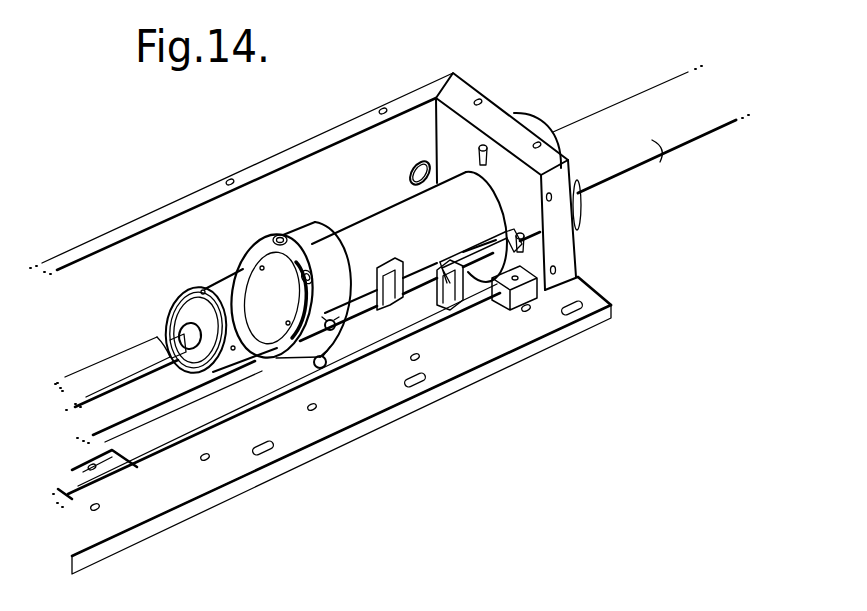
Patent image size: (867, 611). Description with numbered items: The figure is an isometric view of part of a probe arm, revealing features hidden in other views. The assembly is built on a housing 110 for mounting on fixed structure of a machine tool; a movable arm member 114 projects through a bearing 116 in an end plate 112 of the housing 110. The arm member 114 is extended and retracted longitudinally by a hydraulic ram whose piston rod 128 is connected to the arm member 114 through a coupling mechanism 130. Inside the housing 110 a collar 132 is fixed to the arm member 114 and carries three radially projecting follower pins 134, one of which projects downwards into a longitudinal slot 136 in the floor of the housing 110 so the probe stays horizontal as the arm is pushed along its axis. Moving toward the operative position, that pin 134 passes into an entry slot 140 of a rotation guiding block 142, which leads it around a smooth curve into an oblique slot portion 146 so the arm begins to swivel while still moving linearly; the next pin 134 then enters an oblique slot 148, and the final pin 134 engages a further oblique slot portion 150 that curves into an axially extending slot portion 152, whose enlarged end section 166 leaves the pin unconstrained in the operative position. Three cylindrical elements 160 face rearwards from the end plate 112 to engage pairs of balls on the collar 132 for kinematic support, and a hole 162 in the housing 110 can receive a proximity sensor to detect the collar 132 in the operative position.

The housing 110 is at (310, 148).
The end plate 112 is at (470, 94).
The movable arm member 114 is at (661, 172).
The bearing 116 is at (537, 122).
The piston rod 128 is at (117, 360).
The coupling mechanism 130 is at (213, 283).
The collar 132 is at (264, 238).
The follower pins 134 is at (337, 342).
The slot 136 is at (149, 414).
The entry slot 140 is at (343, 305).
The rotation guiding block 142 is at (389, 334).
The oblique slot portion 146 is at (395, 288).
The oblique slot 148 is at (416, 314).
The oblique slot portion 150 is at (468, 306).
The axially extending slot portion 152 is at (462, 272).
The cylindrical elements 160 is at (482, 148).
The hole 162 is at (410, 170).
The enlarged end section 166 is at (481, 245).